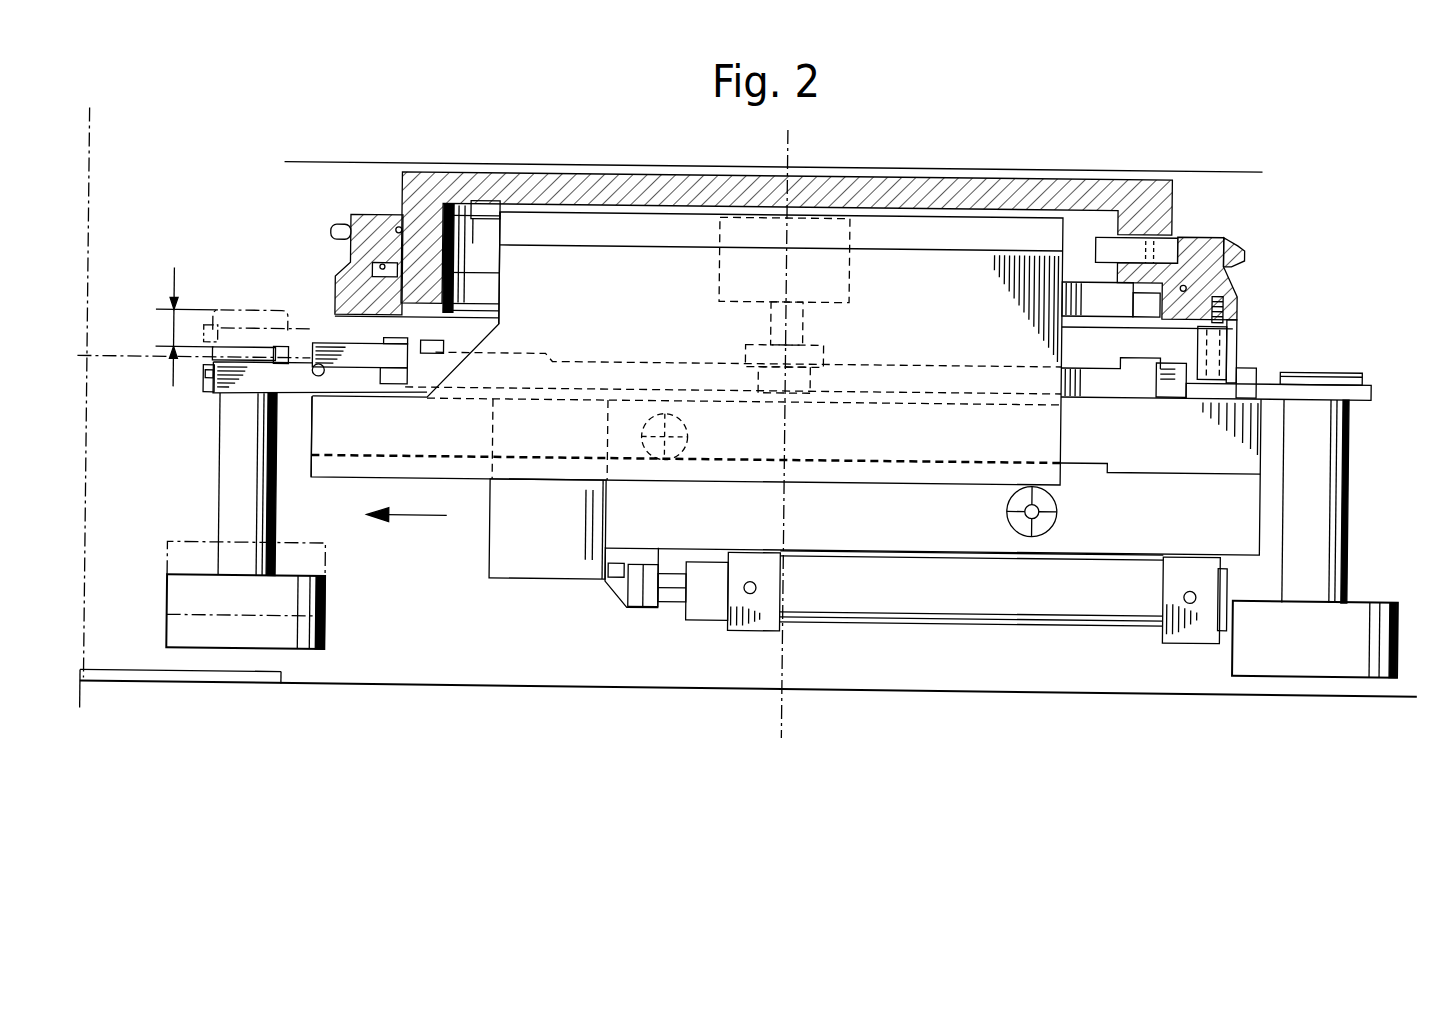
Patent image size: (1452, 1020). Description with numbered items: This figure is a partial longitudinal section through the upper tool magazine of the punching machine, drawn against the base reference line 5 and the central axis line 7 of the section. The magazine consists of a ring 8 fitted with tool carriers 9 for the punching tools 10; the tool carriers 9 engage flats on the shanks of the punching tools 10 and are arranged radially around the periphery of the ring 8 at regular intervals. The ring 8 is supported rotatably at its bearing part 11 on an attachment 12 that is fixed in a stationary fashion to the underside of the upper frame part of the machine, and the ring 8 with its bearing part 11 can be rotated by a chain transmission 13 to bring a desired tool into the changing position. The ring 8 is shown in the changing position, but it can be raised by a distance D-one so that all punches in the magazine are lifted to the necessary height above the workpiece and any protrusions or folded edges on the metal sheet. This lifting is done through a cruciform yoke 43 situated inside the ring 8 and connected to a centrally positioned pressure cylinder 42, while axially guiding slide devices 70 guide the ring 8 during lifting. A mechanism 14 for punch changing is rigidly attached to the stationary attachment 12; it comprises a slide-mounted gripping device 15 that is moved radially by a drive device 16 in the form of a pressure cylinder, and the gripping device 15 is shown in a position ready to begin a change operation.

The base frame 5 is at (136, 679).
The reference axis 7 is at (90, 208).
The ring 8 is at (1260, 372).
The tool carriers 9 is at (204, 371).
The punching tools 10 is at (232, 472).
The bearing part 11 is at (1229, 276).
The attachment 12 is at (942, 180).
The chain transmission 13 is at (1241, 245).
The mechanism for punch changing 14 is at (896, 325).
The gripping device 15 is at (550, 538).
The drive device 16 is at (994, 603).
The pressure cylinder 42 is at (810, 232).
The cruciform yoke 43 is at (1110, 388).
The axially guiding slide devices 70 is at (1238, 341).